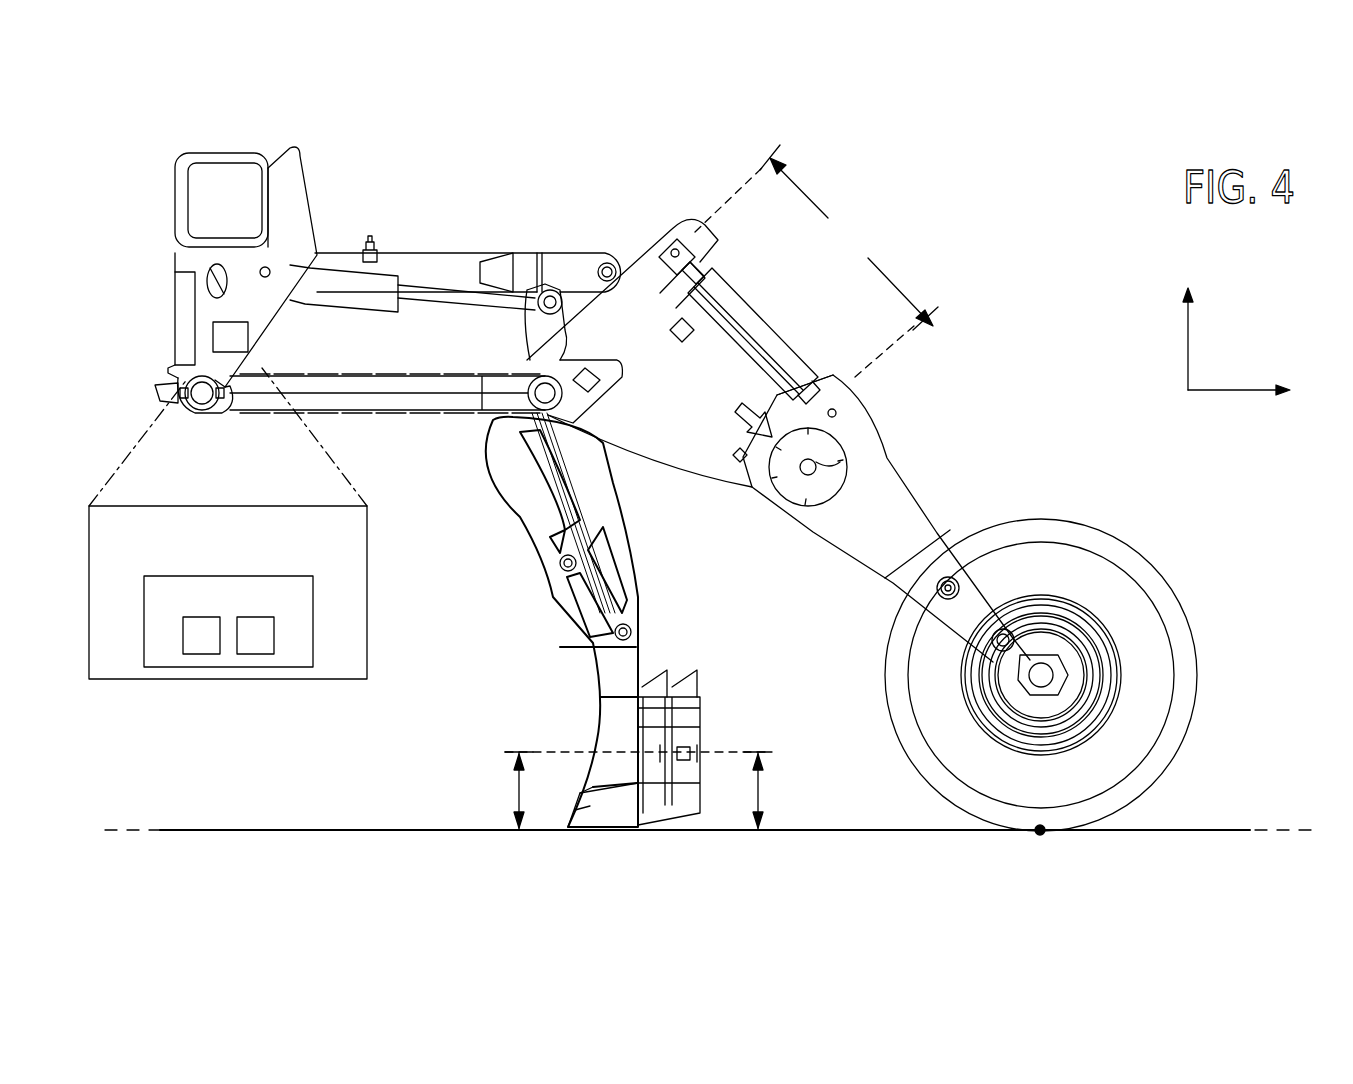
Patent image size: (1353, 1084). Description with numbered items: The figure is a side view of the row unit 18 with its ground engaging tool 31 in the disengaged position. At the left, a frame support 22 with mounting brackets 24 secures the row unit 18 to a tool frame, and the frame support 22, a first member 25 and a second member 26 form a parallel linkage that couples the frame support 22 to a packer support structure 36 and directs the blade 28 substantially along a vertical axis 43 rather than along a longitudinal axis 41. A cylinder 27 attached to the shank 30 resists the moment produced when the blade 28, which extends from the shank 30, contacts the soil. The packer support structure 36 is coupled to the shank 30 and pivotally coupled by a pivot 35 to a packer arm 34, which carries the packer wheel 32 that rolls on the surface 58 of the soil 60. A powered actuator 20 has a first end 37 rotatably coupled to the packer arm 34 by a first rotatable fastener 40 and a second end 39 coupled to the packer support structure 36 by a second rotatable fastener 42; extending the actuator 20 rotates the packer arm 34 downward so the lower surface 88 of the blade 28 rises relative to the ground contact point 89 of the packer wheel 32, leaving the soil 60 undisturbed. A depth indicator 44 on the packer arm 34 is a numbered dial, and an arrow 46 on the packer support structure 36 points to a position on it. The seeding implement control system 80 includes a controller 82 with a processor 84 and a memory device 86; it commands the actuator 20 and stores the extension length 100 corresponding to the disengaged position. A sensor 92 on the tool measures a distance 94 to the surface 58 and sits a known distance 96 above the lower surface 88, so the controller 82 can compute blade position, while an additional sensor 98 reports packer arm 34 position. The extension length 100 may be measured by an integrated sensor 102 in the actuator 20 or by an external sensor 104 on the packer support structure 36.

The row unit 18 is at (888, 193).
The powered actuator 20 is at (752, 322).
The frame support 22 is at (300, 190).
The mounting brackets 24 is at (237, 152).
The first member 25 is at (385, 412).
The second member 26 is at (441, 252).
The cylinder 27 is at (380, 300).
The blade 28 is at (578, 812).
The shank 30 is at (622, 522).
The ground engaging tool 31 is at (520, 574).
The packer wheel 32 is at (1048, 522).
The packer arm 34 is at (893, 490).
The pivot 35 is at (842, 466).
The packer support structure 36 is at (700, 460).
The first end of the actuator 37 is at (825, 370).
The second end of the actuator 39 is at (700, 262).
The first rotatable fastener 40 is at (838, 417).
The longitudinal axis 41 is at (1232, 392).
The second rotatable fastener 42 is at (672, 252).
The vertical axis 43 is at (1188, 345).
The depth indicator 44 is at (830, 500).
The arrow 46 is at (740, 410).
The surface of the soil 58 is at (268, 830).
The soil 60 is at (372, 855).
The seeding implement control system 80 is at (234, 505).
The controller 82 is at (315, 622).
The processor 84 is at (200, 655).
The memory device 86 is at (256, 655).
The lower surface of the blade 88 is at (600, 835).
The ground contact point 89 is at (1042, 838).
The sensor 92 is at (683, 747).
The measured distance 94 is at (760, 790).
The distance 96 is at (517, 796).
The additional sensor 98 is at (736, 462).
The extension length 100 is at (816, 261).
The integrated sensor 102 is at (735, 295).
The external sensor 104 is at (676, 335).